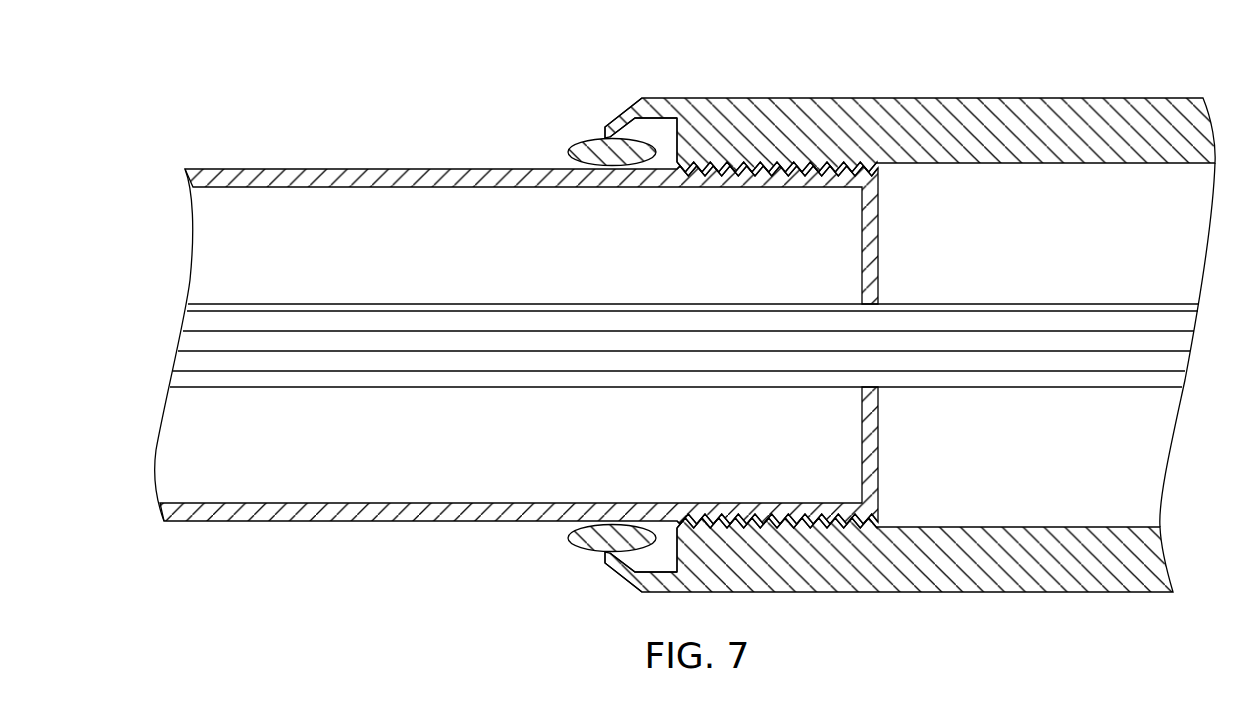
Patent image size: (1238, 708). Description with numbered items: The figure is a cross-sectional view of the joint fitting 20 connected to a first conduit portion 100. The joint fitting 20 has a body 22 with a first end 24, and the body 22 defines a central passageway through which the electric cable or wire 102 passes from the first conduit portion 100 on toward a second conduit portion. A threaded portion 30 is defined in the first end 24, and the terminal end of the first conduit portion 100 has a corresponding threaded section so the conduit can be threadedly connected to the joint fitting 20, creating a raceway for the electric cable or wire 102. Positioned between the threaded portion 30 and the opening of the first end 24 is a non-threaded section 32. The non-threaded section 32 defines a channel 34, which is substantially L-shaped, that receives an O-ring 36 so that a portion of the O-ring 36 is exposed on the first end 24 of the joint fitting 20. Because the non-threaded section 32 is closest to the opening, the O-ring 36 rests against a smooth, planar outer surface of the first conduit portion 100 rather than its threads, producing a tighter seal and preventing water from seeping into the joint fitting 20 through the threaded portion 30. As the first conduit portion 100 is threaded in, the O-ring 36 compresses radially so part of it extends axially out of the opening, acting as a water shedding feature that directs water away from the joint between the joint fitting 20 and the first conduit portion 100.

The joint fitting 20 is at (882, 301).
The body 22 is at (1097, 110).
The first end 24 is at (601, 118).
The threaded portion 30 is at (768, 163).
The non-threaded section 32 is at (666, 130).
The channel 34 is at (648, 133).
The O-ring 36 is at (620, 135).
The first conduit portion 100 is at (322, 160).
The electric cable or wire 102 is at (260, 377).